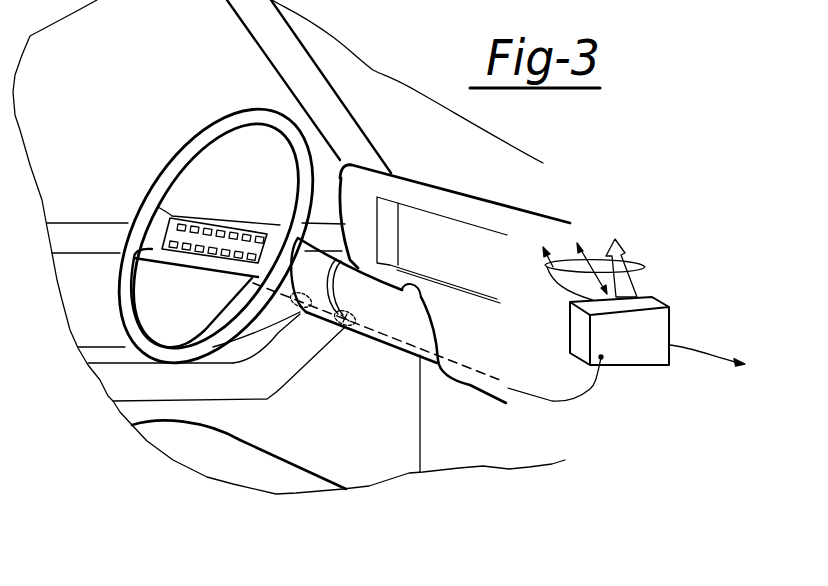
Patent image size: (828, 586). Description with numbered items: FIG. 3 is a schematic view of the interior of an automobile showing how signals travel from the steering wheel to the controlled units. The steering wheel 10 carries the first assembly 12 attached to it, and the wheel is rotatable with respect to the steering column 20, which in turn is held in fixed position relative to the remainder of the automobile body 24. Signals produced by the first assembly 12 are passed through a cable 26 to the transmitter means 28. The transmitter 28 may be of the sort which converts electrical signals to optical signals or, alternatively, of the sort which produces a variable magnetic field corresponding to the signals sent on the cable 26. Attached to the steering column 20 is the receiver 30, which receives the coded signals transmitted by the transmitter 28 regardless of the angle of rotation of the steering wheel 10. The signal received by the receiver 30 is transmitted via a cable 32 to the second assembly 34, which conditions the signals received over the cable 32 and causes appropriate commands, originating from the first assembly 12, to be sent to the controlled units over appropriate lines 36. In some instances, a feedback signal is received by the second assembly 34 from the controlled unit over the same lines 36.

The steering wheel 10 is at (122, 310).
The first assembly 12 is at (185, 220).
The steering column 20 is at (386, 344).
The automobile body 24 is at (527, 156).
The cable 26 is at (235, 281).
The transmitter means 28 is at (303, 308).
The receiver 30 is at (343, 326).
The cable 32 is at (449, 363).
The second assembly 34 is at (642, 358).
The lines 36 is at (642, 267).